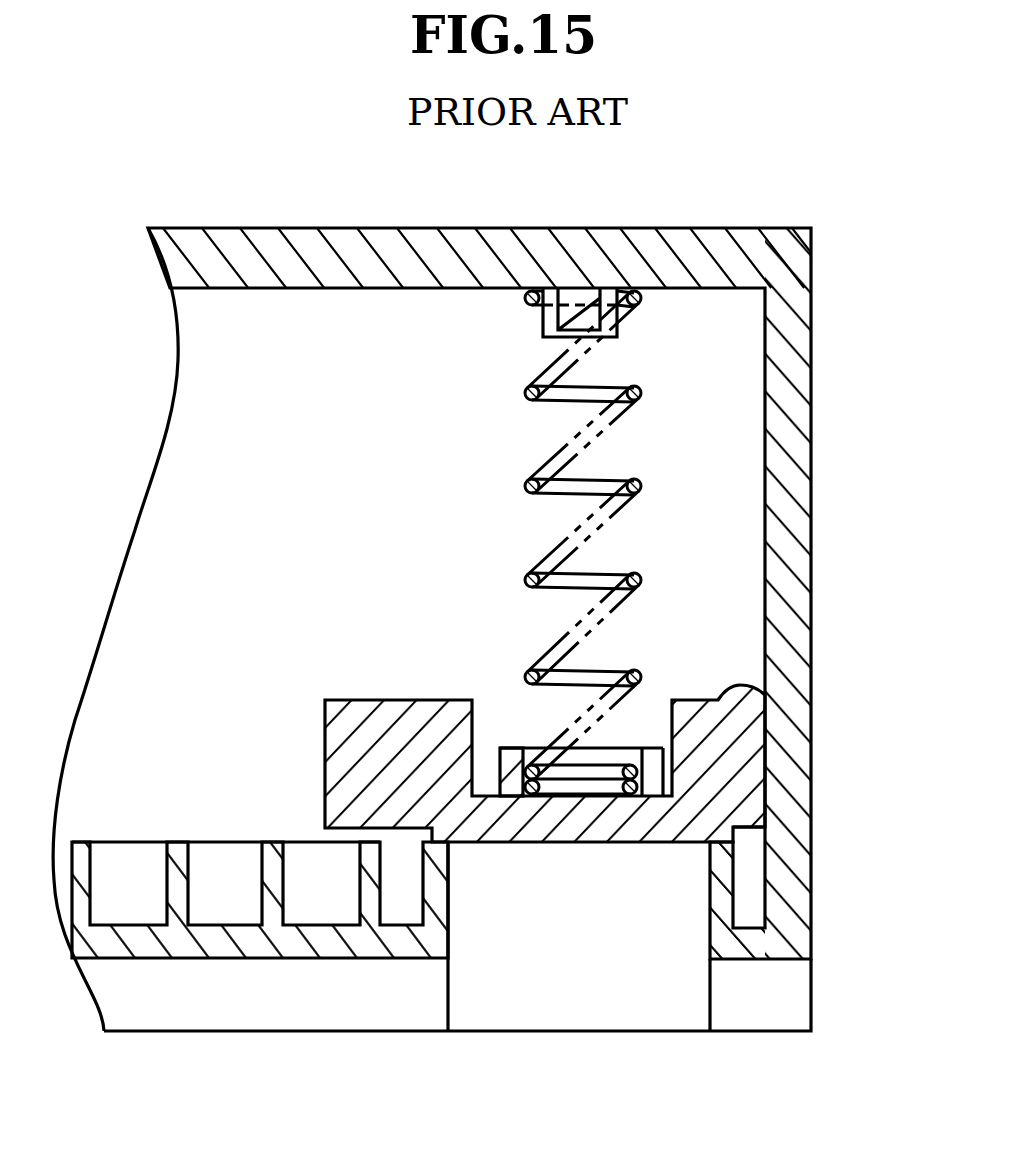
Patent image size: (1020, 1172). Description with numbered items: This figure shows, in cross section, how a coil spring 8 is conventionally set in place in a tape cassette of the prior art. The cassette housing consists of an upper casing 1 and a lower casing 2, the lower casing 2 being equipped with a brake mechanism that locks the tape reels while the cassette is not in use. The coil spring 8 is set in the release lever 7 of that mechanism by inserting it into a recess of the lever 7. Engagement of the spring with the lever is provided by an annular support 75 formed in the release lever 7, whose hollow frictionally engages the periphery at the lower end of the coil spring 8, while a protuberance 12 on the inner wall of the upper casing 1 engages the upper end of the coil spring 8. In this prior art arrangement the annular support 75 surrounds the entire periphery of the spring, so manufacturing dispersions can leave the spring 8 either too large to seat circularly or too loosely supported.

The upper casing 1 is at (822, 371).
The lower casing 2 is at (830, 774).
The release lever 7 is at (355, 720).
The annular support 75 is at (507, 745).
The coil spring 8 is at (607, 483).
The protuberance 12 is at (535, 322).